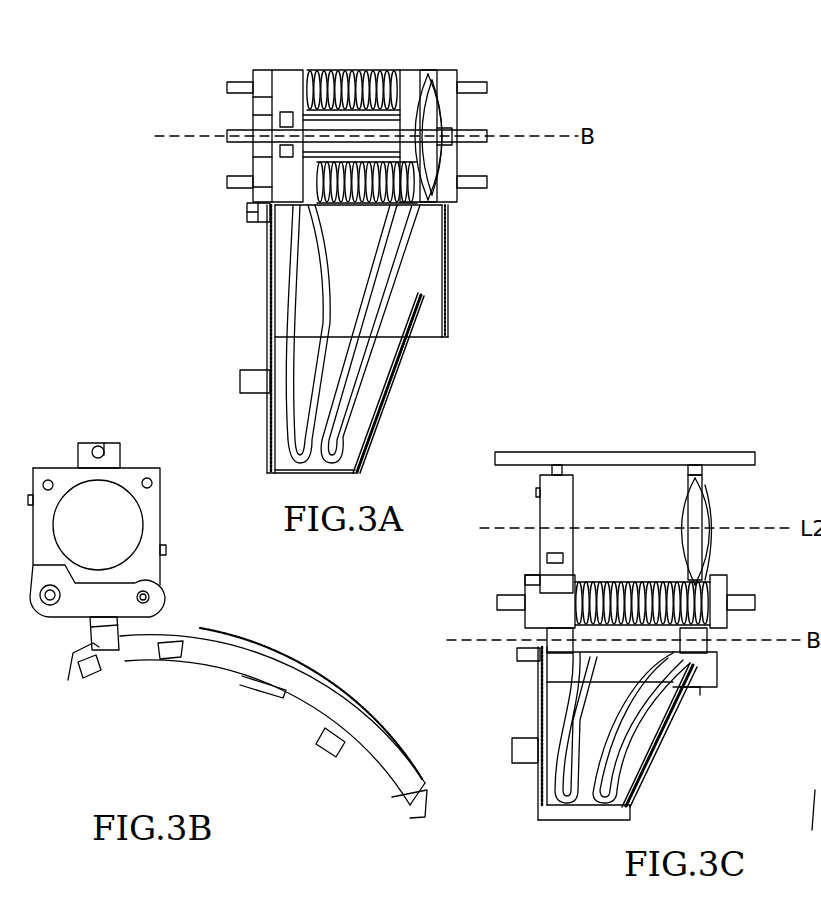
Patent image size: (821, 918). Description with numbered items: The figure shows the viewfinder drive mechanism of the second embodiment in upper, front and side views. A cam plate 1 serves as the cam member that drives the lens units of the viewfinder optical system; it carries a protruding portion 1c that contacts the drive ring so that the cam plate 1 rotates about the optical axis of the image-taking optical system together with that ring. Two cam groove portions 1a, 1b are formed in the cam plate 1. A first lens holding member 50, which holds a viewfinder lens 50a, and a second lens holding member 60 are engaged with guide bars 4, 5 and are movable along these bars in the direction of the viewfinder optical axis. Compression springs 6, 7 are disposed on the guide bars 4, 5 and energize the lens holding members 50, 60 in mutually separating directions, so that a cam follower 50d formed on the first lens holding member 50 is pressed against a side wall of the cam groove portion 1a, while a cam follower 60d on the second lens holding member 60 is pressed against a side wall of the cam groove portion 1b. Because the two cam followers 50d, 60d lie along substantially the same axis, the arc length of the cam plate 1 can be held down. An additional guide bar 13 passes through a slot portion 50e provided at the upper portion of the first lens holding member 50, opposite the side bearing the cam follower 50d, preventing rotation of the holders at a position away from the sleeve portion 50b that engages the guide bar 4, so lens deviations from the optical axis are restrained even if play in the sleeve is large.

In FIG. 3A, the cam plate 1 is at (448, 272).
In FIG. 3B, the cam plate 1 is at (312, 668).
In FIG. 3C, the cam plate 1 is at (560, 805).
In FIG. 3A, the cam groove portion 1a is at (312, 287).
In FIG. 3C, the cam groove portion 1a is at (575, 720).
In FIG. 3A, the cam groove portion 1b is at (380, 368).
In FIG. 3C, the cam groove portion 1b is at (630, 726).
In FIG. 3A, the protruding portion 1c is at (240, 375).
In FIG. 3B, the protruding portion 1c is at (327, 752).
In FIG. 3C, the protruding portion 1c is at (520, 762).
In FIG. 3A, the guide bar 4 is at (488, 182).
In FIG. 3B, the guide bar 4 is at (150, 603).
In FIG. 3C, the guide bar 4 is at (755, 602).
In FIG. 3A, the guide bar 5 is at (488, 88).
In FIG. 3B, the guide bar 5 is at (52, 603).
In FIG. 3A, the compression spring 6 is at (362, 205).
In FIG. 3C, the compression spring 6 is at (640, 582).
In FIG. 3A, the compression spring 7 is at (355, 72).
In FIG. 3B, the guide bar 13 is at (98, 446).
In FIG. 3C, the guide bar 13 is at (755, 456).
In FIG. 3A, the first lens holding member 50 is at (262, 72).
In FIG. 3B, the first lens holding member 50 is at (160, 528).
In FIG. 3C, the first lens holding member 50 is at (548, 508).
In FIG. 3B, the viewfinder lens 50a is at (130, 500).
In FIG. 3B, the sleeve portion 50b is at (158, 580).
In FIG. 3A, the cam follower 50d is at (283, 120).
In FIG. 3B, the cam follower 50d is at (68, 680).
In FIG. 3C, the cam follower 50d is at (560, 655).
In FIG. 3B, the slot portion 50e is at (112, 446).
In FIG. 3A, the second lens holding member 60 is at (428, 72).
In FIG. 3C, the second lens holding member 60 is at (700, 508).
In FIG. 3A, the cam follower 60d is at (440, 125).
In FIG. 3C, the cam follower 60d is at (695, 650).